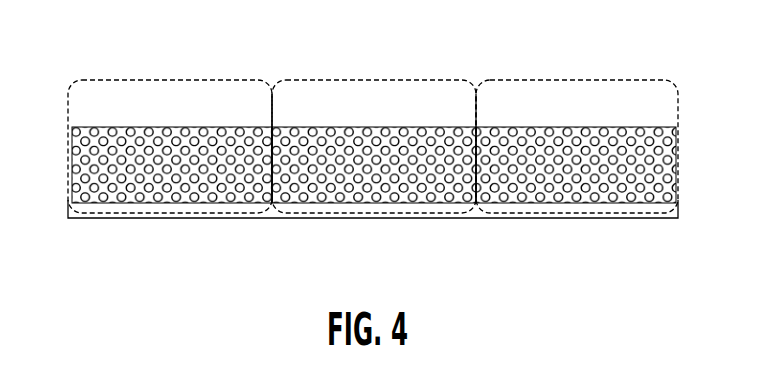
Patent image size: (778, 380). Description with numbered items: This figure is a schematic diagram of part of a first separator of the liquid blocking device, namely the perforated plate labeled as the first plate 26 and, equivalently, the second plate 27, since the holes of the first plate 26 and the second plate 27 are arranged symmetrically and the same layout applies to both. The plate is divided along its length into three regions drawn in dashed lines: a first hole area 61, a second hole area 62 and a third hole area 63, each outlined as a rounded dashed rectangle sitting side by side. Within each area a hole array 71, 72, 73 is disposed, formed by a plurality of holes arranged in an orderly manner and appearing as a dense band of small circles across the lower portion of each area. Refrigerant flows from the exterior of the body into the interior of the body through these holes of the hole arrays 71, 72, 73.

The first plate 26 is at (367, 43).
The second plate 27 is at (373, 178).
The first hole area 61 is at (178, 116).
The second hole area 62 is at (383, 116).
The third hole area 63 is at (587, 116).
The hole array 71 is at (187, 142).
The hole array 72 is at (354, 192).
The hole array 73 is at (557, 192).